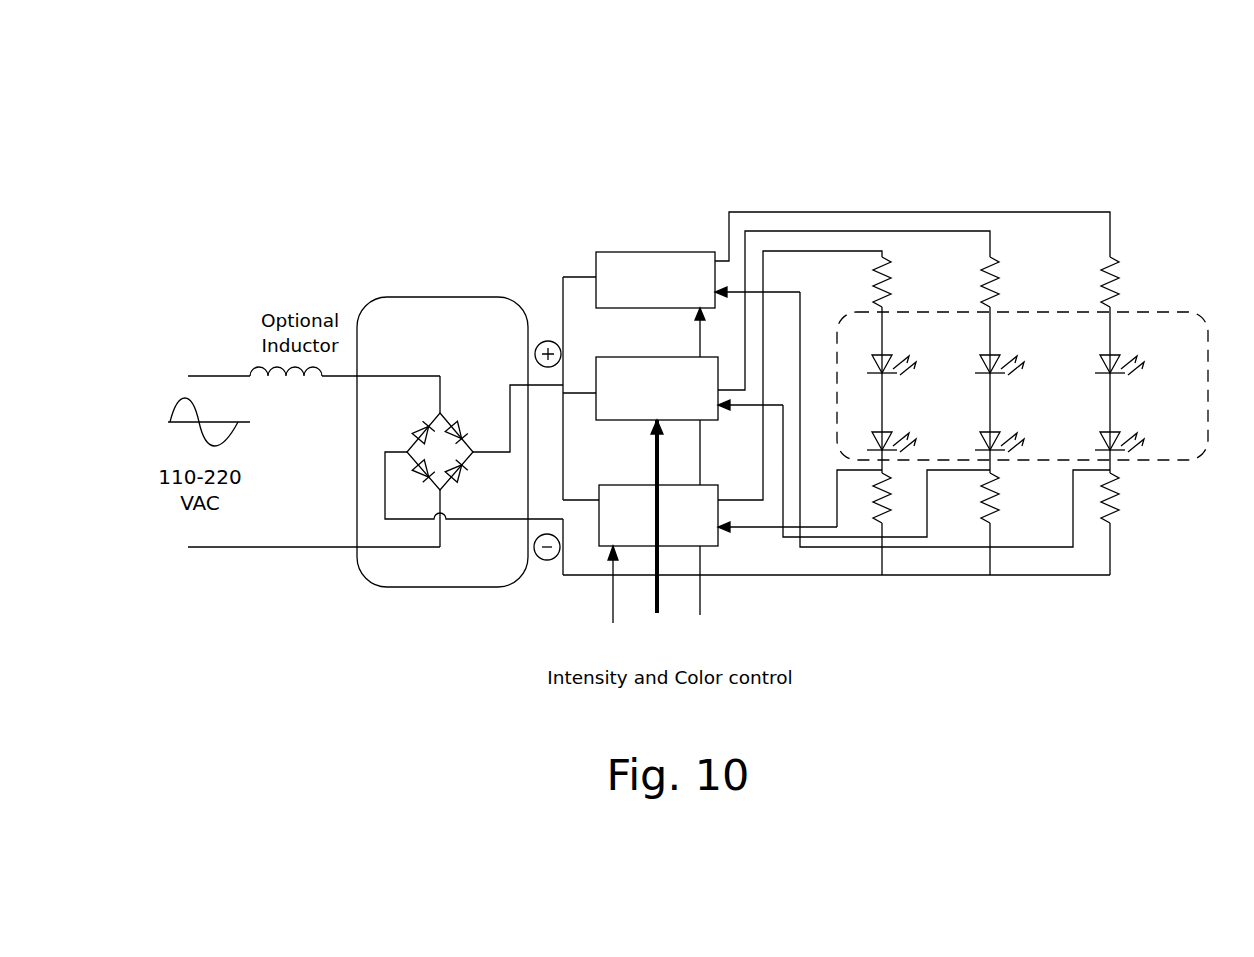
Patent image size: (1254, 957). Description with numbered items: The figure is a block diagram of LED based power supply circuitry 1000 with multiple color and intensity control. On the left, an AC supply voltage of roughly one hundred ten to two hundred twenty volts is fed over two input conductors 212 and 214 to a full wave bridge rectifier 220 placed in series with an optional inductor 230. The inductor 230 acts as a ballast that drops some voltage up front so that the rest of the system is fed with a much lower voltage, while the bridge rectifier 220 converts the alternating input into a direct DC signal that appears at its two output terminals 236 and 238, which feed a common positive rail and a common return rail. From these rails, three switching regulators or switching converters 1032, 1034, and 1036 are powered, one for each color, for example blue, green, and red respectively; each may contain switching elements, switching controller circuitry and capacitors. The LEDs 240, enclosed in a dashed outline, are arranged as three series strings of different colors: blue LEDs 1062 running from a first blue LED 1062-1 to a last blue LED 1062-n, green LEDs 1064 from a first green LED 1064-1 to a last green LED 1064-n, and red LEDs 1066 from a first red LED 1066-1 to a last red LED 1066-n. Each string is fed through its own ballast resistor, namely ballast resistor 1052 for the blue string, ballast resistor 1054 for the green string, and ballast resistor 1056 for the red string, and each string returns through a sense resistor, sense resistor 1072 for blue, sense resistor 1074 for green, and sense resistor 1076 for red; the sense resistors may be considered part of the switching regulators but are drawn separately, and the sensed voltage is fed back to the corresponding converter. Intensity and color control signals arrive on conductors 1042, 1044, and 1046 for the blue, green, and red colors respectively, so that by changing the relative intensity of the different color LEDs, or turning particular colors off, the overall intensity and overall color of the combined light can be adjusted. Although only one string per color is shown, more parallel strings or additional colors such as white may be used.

The input conductor 212 is at (208, 375).
The input conductor 214 is at (228, 549).
The inductor 230 is at (258, 374).
The full wave bridge rectifier 220 is at (463, 297).
The positive rectifier output terminal 236 is at (557, 309).
The negative rectifier output terminal 238 is at (562, 573).
The power supply circuitry 1000 is at (1012, 168).
The switching regulator 1032 is at (684, 252).
The switching regulator 1034 is at (673, 357).
The switching regulator 1036 is at (647, 485).
The conductor 1042 is at (700, 586).
The conductor 1044 is at (657, 600).
The conductor 1046 is at (614, 600).
The LEDs 240 is at (846, 312).
The ballast resistor 1056 is at (888, 276).
The ballast resistor 1054 is at (996, 272).
The ballast resistor 1052 is at (1120, 270).
The red LEDs 1066 is at (889, 325).
The green LEDs 1064 is at (997, 325).
The blue LEDs 1062 is at (1120, 292).
The red LED 1066-1 is at (886, 354).
The green LED 1064-1 is at (994, 354).
The blue LED 1062-1 is at (1114, 354).
The red LED 1066-n is at (886, 428).
The green LED 1064-n is at (994, 428).
The blue LED 1062-n is at (1114, 428).
The sense resistor 1076 is at (887, 505).
The sense resistor 1074 is at (997, 505).
The sense resistor 1072 is at (1117, 505).